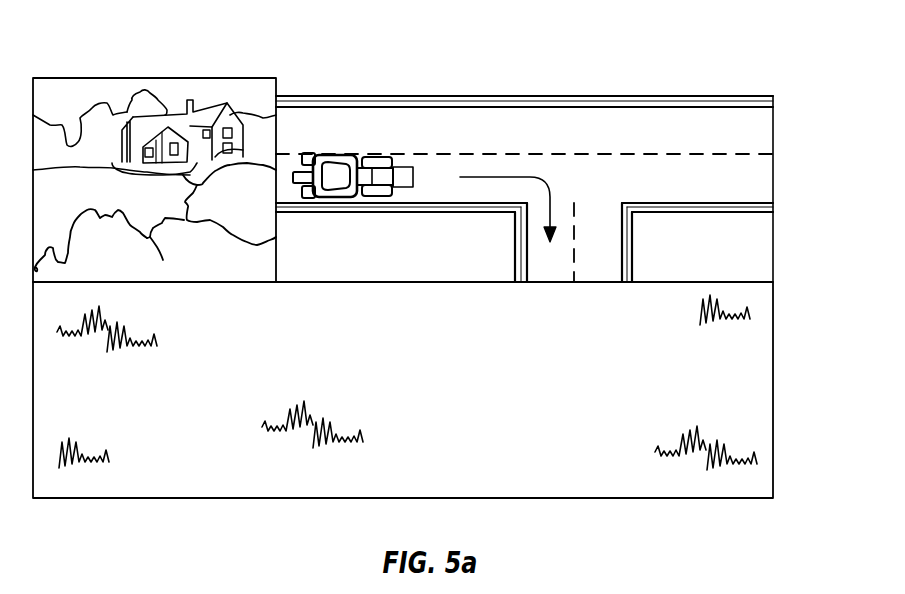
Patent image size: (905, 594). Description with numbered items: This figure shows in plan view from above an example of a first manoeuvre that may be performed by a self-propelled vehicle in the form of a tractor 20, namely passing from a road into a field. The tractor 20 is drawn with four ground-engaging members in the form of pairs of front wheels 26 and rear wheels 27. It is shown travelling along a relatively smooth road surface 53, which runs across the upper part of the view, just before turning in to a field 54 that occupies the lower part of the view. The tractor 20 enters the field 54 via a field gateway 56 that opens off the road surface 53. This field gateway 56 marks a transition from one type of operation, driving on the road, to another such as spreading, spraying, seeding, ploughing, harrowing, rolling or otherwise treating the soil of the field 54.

The tractor 20 is at (330, 156).
The front wheels 26 is at (373, 158).
The rear wheels 27 is at (310, 156).
The road surface 53 is at (685, 120).
The field 54 is at (753, 352).
The field gateway 56 is at (608, 257).